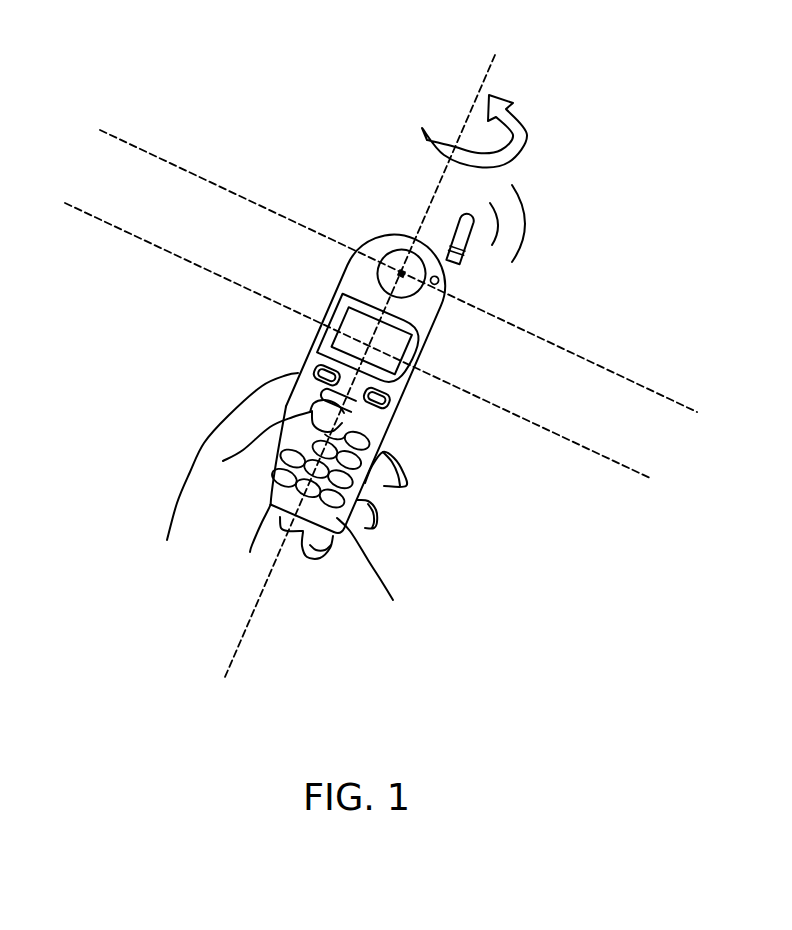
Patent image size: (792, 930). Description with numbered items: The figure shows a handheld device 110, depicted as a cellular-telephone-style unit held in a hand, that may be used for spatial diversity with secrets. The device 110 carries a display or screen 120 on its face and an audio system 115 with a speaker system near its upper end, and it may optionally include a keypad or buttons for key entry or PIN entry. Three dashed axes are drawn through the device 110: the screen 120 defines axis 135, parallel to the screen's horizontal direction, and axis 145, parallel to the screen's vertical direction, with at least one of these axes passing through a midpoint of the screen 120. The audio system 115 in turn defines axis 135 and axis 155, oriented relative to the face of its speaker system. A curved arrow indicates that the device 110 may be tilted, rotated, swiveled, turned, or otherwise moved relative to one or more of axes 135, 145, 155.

The device 110 is at (348, 530).
The audio system 115 is at (420, 267).
The screen 120 is at (380, 368).
The axis 135 is at (238, 647).
The axis 145 is at (140, 243).
The axis 155 is at (173, 162).